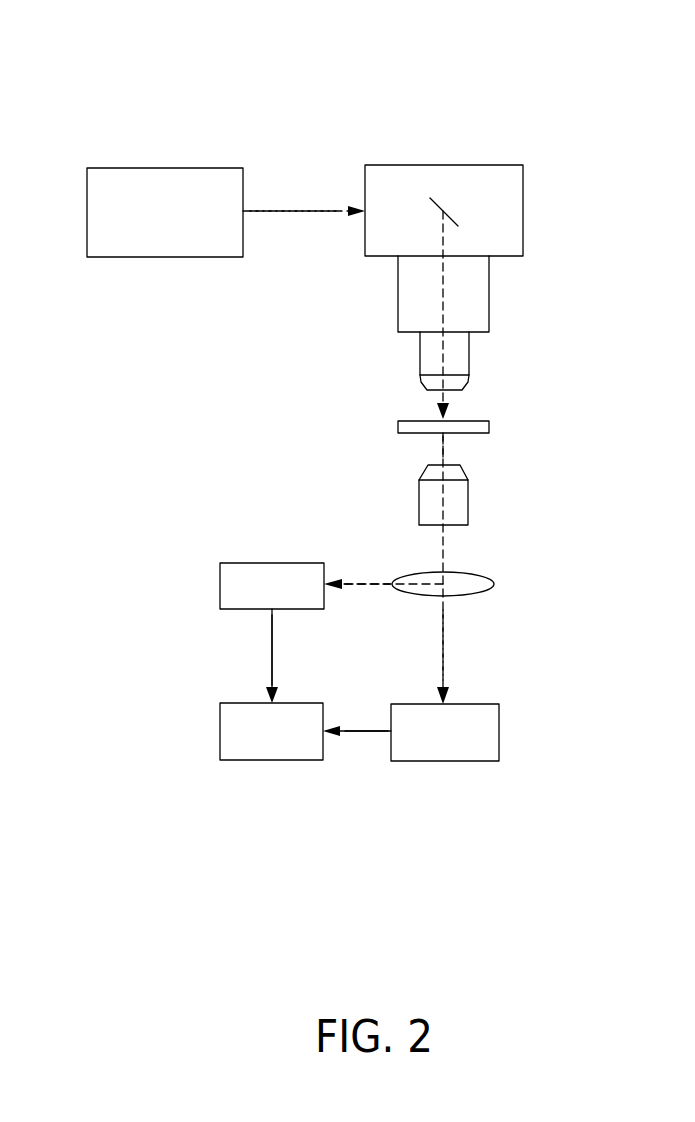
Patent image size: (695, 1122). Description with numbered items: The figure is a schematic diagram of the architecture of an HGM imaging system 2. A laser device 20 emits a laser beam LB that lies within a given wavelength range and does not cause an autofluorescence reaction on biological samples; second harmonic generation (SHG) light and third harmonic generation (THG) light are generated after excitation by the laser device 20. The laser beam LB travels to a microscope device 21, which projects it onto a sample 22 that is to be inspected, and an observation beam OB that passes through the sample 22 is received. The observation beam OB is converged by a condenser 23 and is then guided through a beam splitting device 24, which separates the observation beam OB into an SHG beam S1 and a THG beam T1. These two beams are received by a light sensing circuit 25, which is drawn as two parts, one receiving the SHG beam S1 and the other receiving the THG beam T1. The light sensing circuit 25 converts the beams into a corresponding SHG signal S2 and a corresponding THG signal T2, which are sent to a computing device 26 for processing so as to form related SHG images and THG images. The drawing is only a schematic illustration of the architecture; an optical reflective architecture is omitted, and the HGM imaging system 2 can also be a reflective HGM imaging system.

The HGM imaging system 2 is at (88, 42).
The laser device 20 is at (163, 168).
The microscope device 21 is at (443, 165).
The sample 22 is at (489, 427).
The condenser 23 is at (468, 500).
The beam splitting device 24 is at (495, 584).
The light sensing circuit 25 is at (272, 563).
The computing device 26 is at (220, 732).
The laser beam LB is at (308, 210).
The observation beam OB is at (444, 452).
The SHG beam S1 is at (370, 583).
The SHG signal S2 is at (271, 655).
The THG beam T1 is at (446, 643).
The THG signal T2 is at (358, 730).